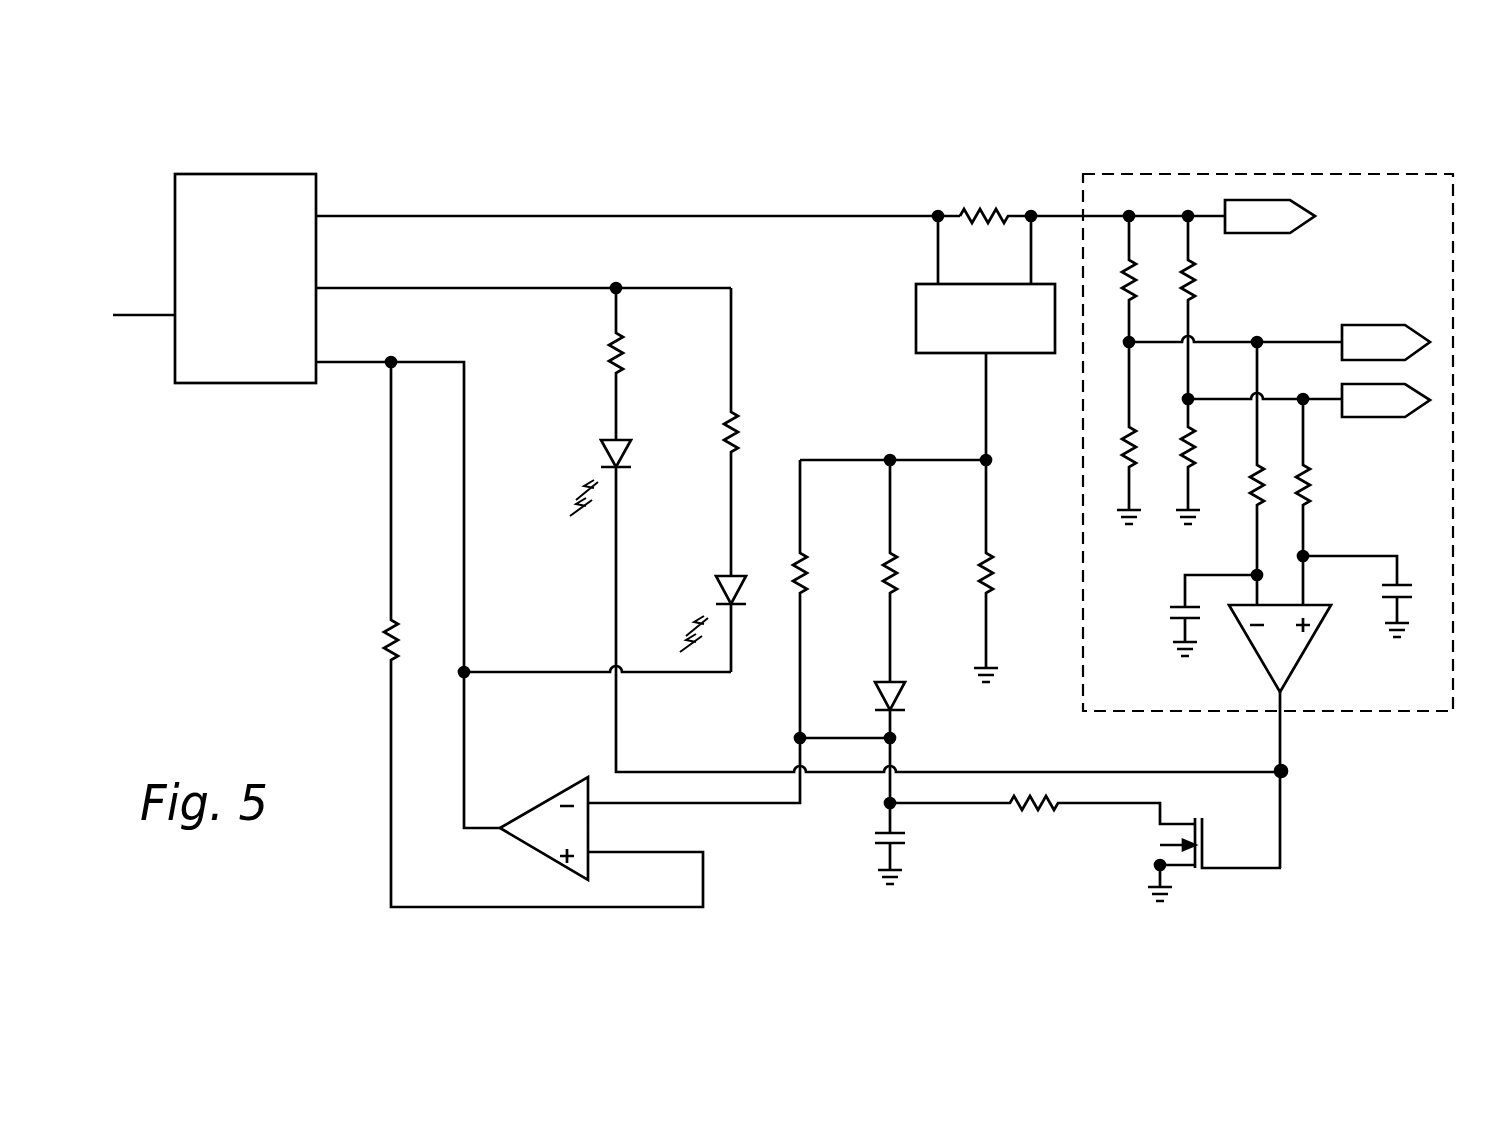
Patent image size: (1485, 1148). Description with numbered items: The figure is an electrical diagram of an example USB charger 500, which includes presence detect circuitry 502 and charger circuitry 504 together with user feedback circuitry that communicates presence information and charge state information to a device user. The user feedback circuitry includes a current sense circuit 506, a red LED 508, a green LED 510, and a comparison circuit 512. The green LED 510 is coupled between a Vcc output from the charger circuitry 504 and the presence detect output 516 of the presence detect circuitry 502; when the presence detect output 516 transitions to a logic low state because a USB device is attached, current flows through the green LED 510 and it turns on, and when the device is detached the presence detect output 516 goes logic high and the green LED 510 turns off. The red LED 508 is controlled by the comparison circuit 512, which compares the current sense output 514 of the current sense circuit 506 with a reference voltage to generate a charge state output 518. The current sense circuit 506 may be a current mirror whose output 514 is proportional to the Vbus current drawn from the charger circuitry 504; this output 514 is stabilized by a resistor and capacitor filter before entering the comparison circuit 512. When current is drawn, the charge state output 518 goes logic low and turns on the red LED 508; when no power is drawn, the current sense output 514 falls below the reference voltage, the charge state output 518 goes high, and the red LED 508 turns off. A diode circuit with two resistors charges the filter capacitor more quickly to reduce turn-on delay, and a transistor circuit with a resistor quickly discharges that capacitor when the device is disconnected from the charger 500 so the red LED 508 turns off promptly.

The USB charger 500 is at (822, 140).
The presence detect circuitry 502 is at (1348, 174).
The charger circuitry 504 is at (253, 174).
The current sense circuit 506 is at (916, 324).
The red LED 508 is at (731, 576).
The green LED 510 is at (614, 440).
The comparison circuit 512 is at (532, 848).
The current sense output 514 is at (986, 422).
The presence detect output 516 is at (1281, 735).
The charge state output 518 is at (464, 742).